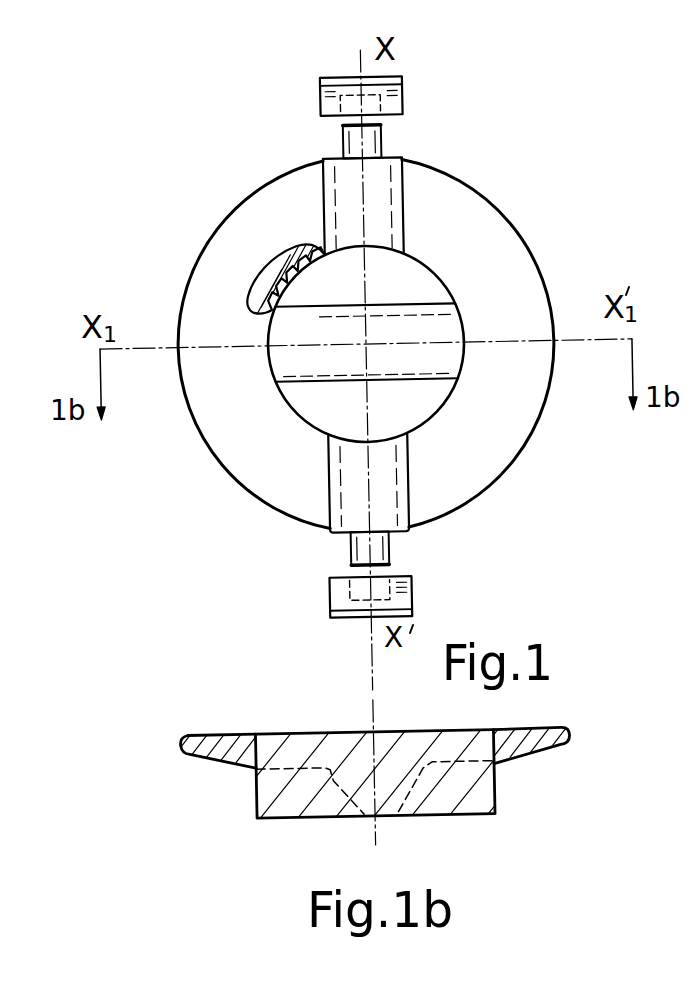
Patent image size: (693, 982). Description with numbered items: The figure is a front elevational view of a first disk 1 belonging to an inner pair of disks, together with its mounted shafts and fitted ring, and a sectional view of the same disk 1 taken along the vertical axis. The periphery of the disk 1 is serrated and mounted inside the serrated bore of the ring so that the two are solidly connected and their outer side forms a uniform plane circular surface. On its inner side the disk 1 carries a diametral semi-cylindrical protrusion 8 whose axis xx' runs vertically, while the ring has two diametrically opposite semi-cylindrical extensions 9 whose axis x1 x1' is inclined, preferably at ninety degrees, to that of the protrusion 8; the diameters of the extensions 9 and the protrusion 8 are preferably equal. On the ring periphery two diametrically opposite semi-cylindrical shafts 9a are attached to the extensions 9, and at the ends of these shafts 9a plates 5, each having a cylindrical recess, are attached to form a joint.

In FIG. 1, the disk 1 is at (422, 283).
In FIG. 1, the plates 5 is at (392, 100).
In FIG. 1, the semi-cylindrical protrusion 8 is at (432, 362).
In FIG. 1, the semi-cylindrical extensions 9 is at (387, 182).
In FIG. 1B, the semi-cylindrical extensions 9 is at (387, 813).
In FIG. 1, the semi-cylindrical shafts 9a is at (372, 138).